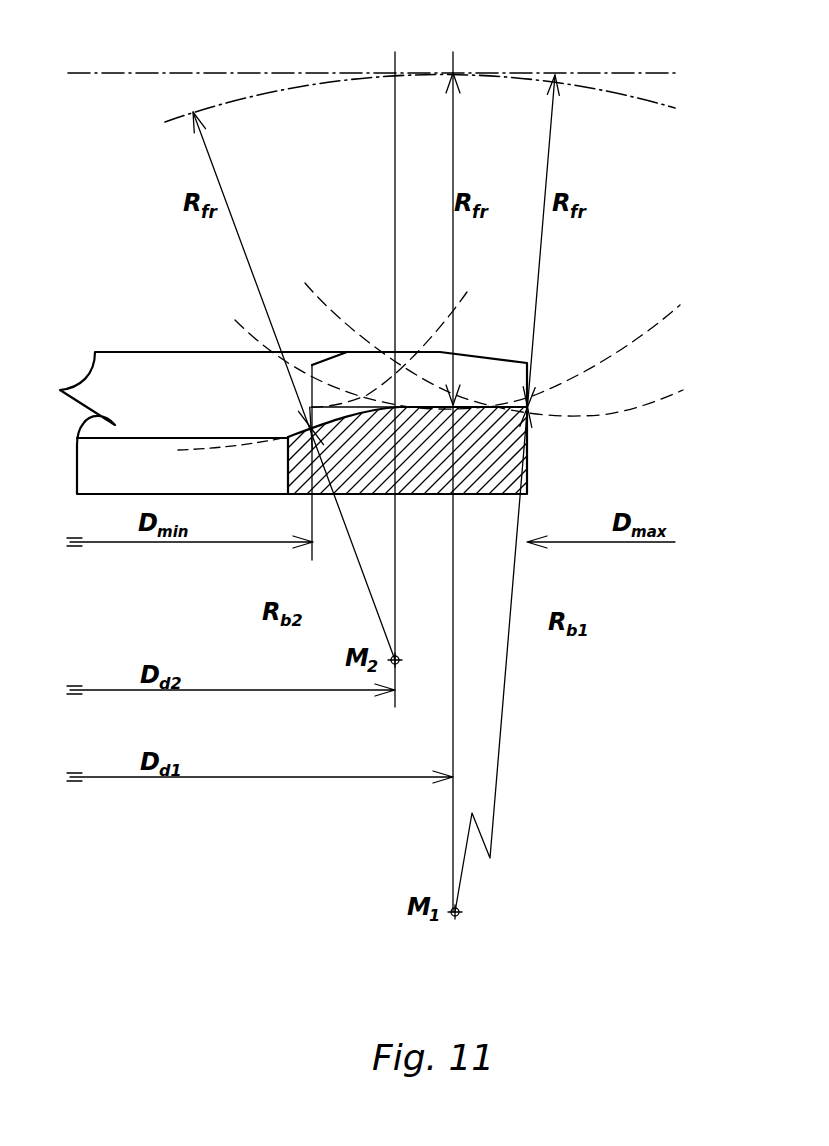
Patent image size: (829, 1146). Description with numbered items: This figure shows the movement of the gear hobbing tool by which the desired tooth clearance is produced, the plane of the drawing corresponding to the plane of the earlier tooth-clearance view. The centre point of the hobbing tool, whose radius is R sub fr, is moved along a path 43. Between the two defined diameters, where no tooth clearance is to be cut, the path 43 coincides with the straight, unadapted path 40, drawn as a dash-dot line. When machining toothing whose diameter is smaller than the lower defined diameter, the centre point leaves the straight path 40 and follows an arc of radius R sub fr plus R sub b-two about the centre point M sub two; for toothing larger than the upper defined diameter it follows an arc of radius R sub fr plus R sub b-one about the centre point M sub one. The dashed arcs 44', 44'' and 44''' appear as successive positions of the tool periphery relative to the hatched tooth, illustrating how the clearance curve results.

The unadapted path 40 is at (152, 73).
The path 43 is at (242, 97).
The flank surface arc 44' is at (413, 345).
The flank surface arc 44'' is at (457, 351).
The flank surface arc 44''' is at (491, 316).